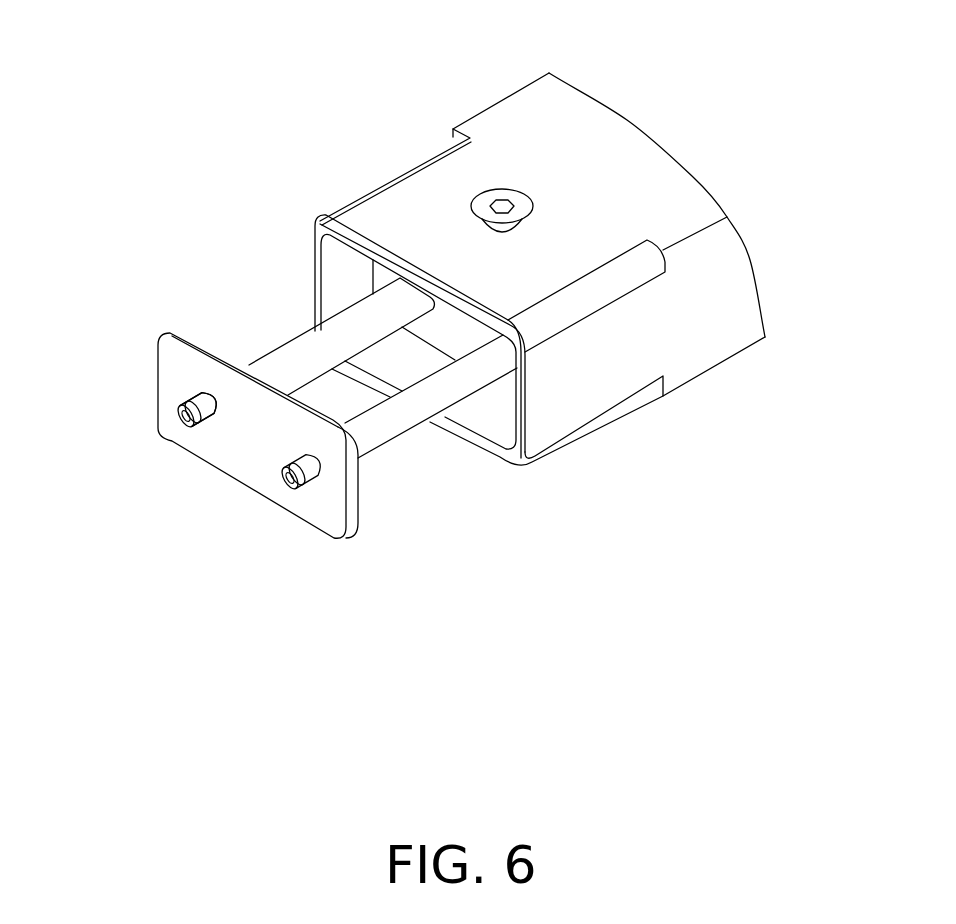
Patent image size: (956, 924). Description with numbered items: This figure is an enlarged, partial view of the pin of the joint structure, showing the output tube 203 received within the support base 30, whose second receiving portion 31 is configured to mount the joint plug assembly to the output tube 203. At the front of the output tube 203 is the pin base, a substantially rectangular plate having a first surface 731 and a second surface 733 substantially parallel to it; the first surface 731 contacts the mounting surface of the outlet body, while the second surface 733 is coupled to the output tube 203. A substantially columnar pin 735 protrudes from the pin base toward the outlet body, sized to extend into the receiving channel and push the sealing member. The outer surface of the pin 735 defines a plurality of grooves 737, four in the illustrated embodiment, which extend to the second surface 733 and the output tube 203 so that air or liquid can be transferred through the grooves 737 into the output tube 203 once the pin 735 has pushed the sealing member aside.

The support base 30 is at (505, 72).
The second receiving portion 31 is at (400, 213).
The output tube 203 is at (292, 355).
The first surface 731 is at (301, 435).
The second surface 733 is at (365, 505).
The pin 735 is at (203, 426).
The grooves 737 is at (190, 398).